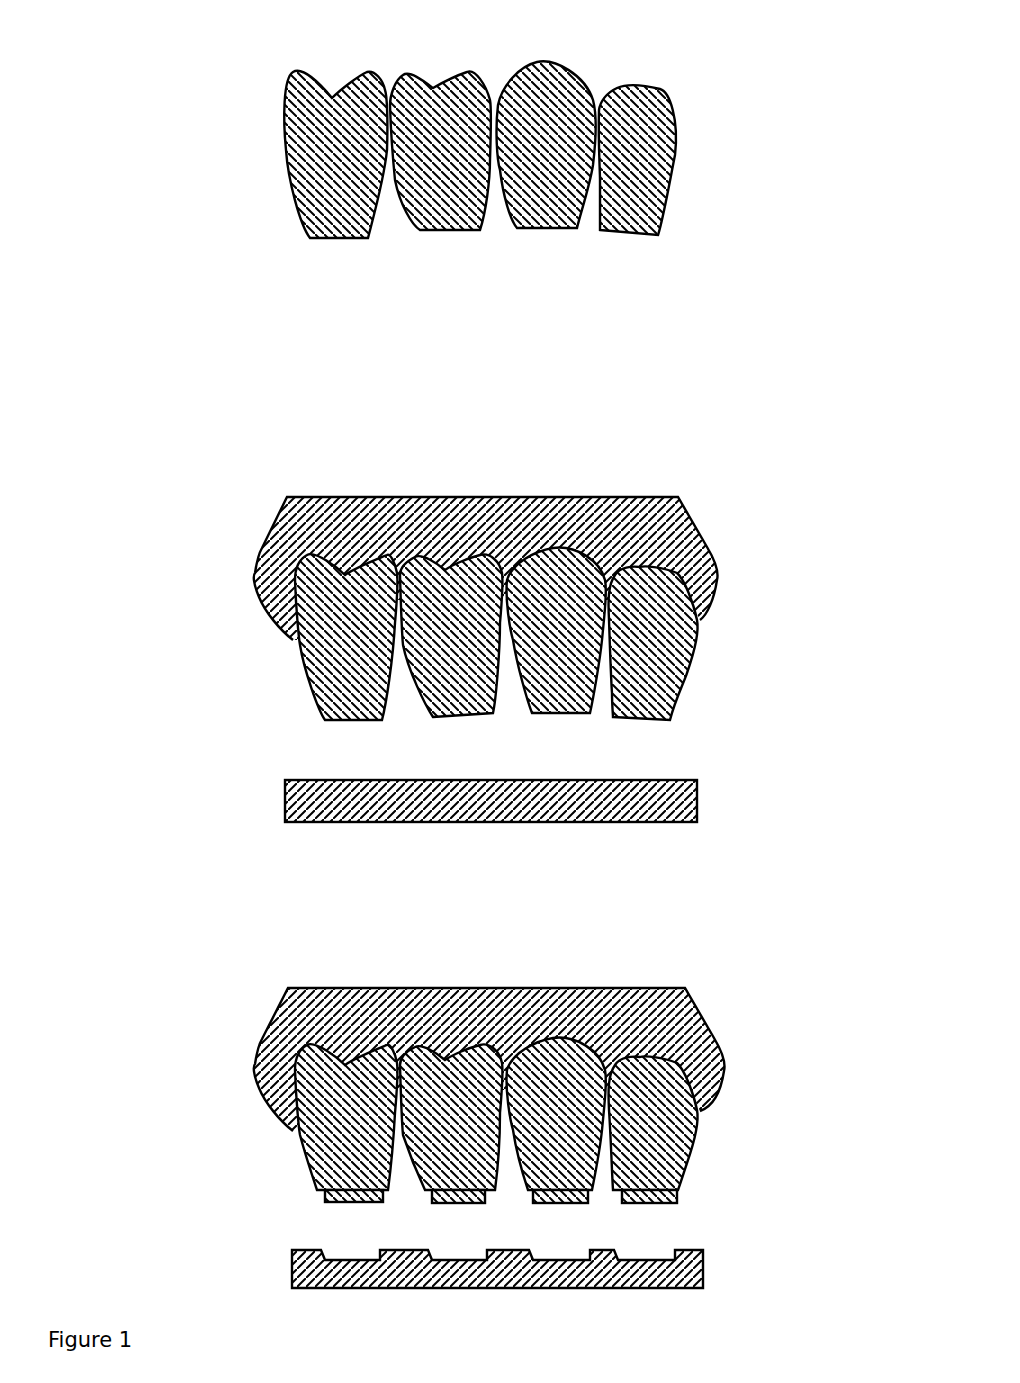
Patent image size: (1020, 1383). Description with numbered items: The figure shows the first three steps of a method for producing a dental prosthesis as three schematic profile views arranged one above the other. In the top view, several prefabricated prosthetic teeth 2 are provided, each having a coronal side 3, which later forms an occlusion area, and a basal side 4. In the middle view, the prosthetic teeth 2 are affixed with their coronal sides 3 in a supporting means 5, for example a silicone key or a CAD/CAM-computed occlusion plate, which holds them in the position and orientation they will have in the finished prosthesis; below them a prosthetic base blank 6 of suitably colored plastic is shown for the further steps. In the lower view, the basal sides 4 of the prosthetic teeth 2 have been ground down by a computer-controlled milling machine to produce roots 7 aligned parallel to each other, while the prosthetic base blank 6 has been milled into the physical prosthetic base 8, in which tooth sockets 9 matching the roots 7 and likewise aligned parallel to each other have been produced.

The prosthetic tooth 2 is at (325, 152).
The coronal side 3 is at (332, 68).
The basal side 4 is at (343, 247).
The supporting means 5 is at (615, 528).
The prosthetic base blank 6 is at (597, 800).
The root 7 is at (673, 1193).
The prosthetic base 8 is at (638, 1282).
The tooth socket 9 is at (647, 1252).